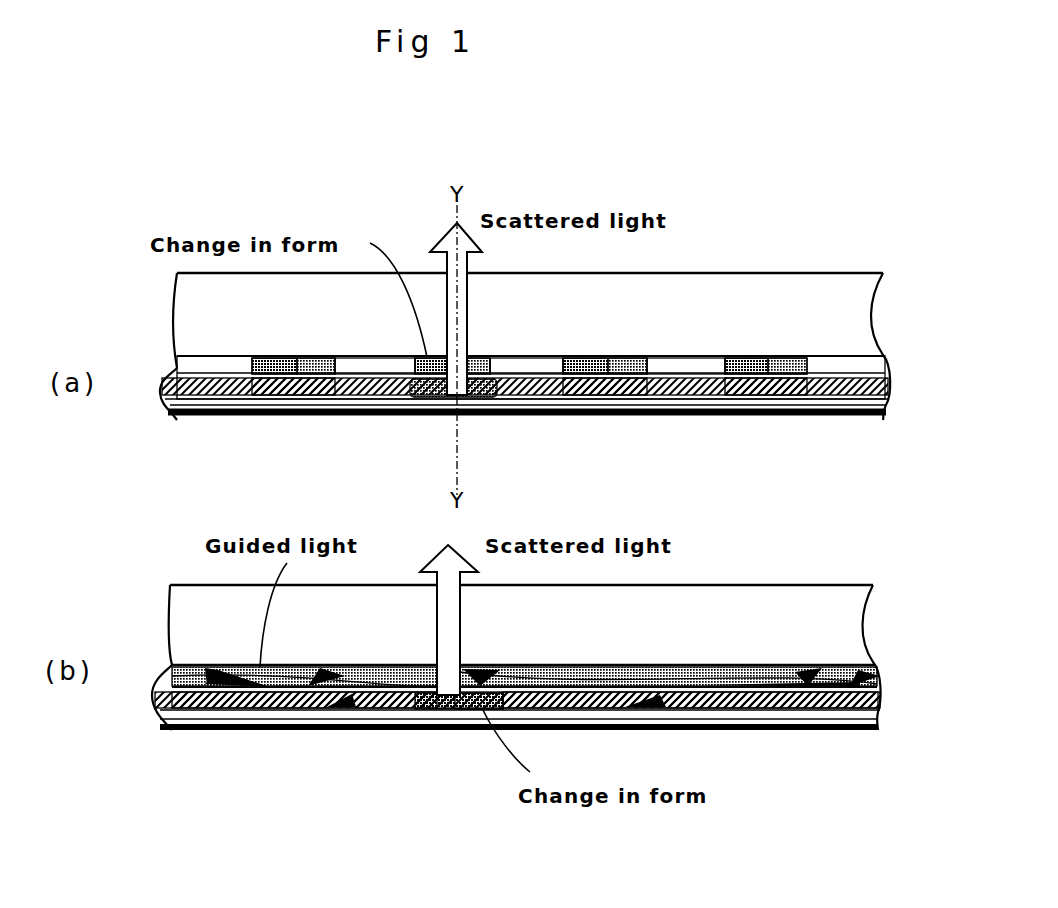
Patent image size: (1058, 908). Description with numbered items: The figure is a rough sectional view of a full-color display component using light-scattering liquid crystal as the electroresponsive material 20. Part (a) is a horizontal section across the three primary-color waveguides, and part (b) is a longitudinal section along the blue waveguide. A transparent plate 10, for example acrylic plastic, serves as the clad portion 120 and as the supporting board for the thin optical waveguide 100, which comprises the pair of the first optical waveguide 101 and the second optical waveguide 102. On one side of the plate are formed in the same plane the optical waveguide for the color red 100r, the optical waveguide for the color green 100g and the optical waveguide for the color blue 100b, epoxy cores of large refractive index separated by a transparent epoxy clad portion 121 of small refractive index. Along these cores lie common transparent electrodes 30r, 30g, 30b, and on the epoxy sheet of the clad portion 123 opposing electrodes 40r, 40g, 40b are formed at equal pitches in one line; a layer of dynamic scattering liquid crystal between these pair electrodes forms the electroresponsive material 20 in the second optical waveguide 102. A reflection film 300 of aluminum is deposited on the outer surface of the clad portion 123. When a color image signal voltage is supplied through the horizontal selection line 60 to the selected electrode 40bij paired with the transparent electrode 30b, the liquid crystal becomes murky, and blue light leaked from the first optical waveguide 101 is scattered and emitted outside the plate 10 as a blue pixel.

The transparent plate 10 is at (650, 298).
The clad portion 120 is at (757, 290).
The electroresponsive material 20 is at (215, 380).
The transparent electrode for red 30r is at (262, 356).
The transparent electrode for green 30g is at (573, 378).
The transparent electrode for blue 30b is at (430, 357).
The optical waveguide for the color red 100r is at (305, 356).
The optical waveguide for the color green 100g is at (598, 378).
The optical waveguide for the color blue 100b is at (475, 356).
The optical waveguide 100 is at (496, 400).
The first optical waveguide 101 is at (468, 354).
The second optical waveguide 102 is at (438, 400).
The transparent clad portion 121 is at (550, 367).
The clad portion 123 is at (175, 420).
The reflection film 300 is at (223, 418).
The electrode for red 40r is at (258, 395).
The electrode for green 40g is at (632, 395).
The electrode for blue 40b is at (290, 710).
The selected blue electrode 40bij is at (472, 400).
The horizontal selection line 60 is at (480, 720).